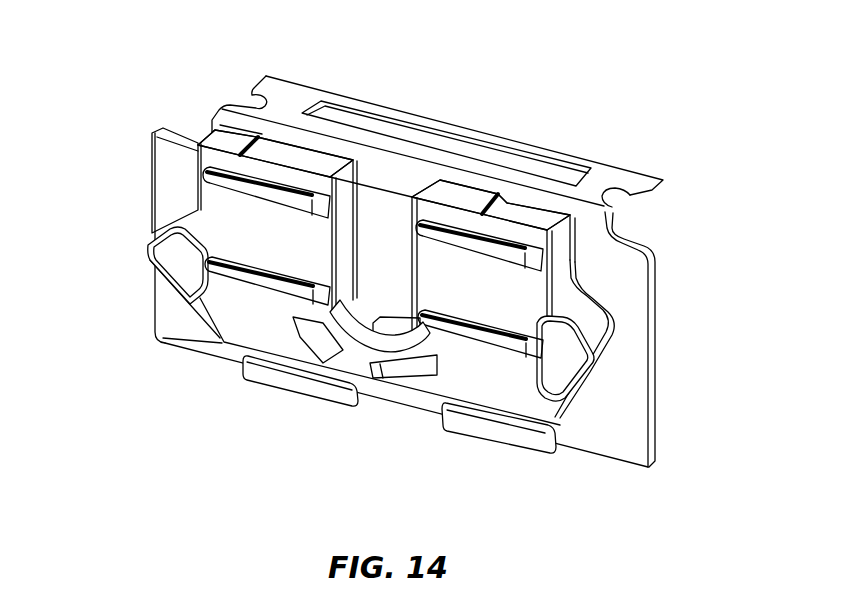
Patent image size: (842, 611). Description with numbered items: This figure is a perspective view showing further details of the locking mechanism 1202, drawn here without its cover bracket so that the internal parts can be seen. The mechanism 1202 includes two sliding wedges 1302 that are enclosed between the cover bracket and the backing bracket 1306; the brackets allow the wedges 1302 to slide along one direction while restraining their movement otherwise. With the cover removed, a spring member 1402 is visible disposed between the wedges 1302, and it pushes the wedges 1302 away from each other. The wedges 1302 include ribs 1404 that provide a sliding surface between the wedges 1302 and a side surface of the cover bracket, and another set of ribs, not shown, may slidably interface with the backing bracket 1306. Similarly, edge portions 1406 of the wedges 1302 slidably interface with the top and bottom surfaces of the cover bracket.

The locking mechanism 1202 is at (616, 108).
The sliding wedges 1302 is at (163, 248).
The backing bracket 1306 is at (162, 158).
The spring member 1402 is at (383, 366).
The ribs 1404 is at (263, 194).
The edge portions 1406 is at (280, 143).